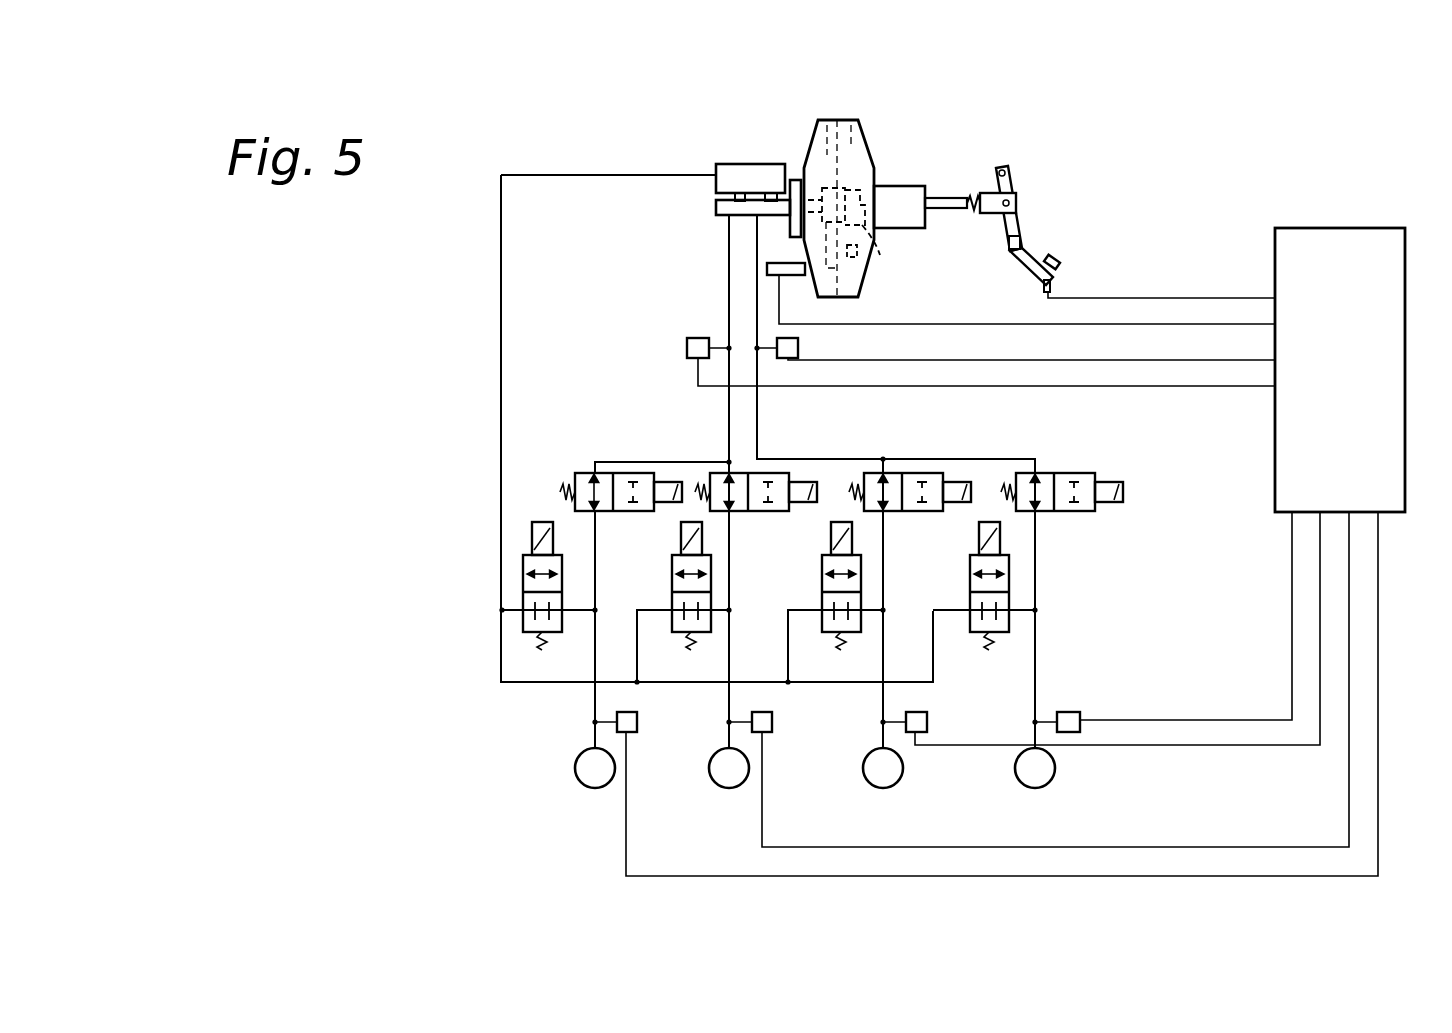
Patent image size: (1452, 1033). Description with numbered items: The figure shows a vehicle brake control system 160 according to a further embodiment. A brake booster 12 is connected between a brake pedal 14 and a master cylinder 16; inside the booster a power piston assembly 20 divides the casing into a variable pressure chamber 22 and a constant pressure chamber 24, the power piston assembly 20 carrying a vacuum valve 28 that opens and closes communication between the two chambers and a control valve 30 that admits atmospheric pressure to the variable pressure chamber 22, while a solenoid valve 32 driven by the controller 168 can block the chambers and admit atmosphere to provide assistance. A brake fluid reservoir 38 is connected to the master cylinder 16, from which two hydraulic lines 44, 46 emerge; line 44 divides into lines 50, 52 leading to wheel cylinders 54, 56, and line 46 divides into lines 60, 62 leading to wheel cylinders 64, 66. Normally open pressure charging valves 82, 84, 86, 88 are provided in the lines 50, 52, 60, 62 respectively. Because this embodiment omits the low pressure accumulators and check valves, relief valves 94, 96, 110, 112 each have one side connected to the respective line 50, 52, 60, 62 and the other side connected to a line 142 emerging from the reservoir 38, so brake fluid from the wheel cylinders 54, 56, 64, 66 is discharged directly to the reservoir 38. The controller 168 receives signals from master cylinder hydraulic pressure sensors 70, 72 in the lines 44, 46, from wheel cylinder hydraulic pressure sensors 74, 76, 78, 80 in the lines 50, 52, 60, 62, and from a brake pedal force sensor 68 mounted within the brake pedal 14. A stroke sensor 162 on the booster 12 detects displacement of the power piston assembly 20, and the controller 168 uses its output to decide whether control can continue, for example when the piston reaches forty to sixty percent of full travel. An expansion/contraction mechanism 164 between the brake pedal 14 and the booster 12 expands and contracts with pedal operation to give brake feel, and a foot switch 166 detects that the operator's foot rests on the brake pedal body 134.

The brake booster 12 is at (862, 127).
The brake pedal 14 is at (1020, 232).
The master cylinder 16 is at (716, 208).
The power piston assembly 20 is at (835, 192).
The variable pressure chamber 22 is at (852, 133).
The constant pressure chamber 24 is at (823, 135).
The vacuum valve 28 is at (858, 196).
The control valve 30 is at (880, 255).
The solenoid valve 32 is at (858, 257).
The brake fluid reservoir 38 is at (716, 170).
The hydraulic line 44 is at (728, 404).
The hydraulic line 46 is at (758, 408).
The hydraulic line 50 is at (596, 520).
The hydraulic line 52 is at (730, 532).
The wheel cylinder 54 is at (594, 789).
The wheel cylinder 56 is at (729, 789).
The hydraulic line 60 is at (884, 524).
The hydraulic line 62 is at (1036, 558).
The wheel cylinder 64 is at (883, 789).
The wheel cylinder 66 is at (1035, 789).
The brake pedal force sensor 68 is at (1021, 243).
The master cylinder hydraulic pressure sensor 70 is at (687, 345).
The master cylinder hydraulic pressure sensor 72 is at (798, 350).
The wheel cylinder hydraulic pressure sensor 74 is at (629, 733).
The wheel cylinder hydraulic pressure sensor 76 is at (765, 733).
The wheel cylinder hydraulic pressure sensor 78 is at (928, 722).
The wheel cylinder hydraulic pressure sensor 80 is at (1080, 718).
The pressure charging valve 82 is at (587, 473).
The pressure charging valve 84 is at (719, 473).
The pressure charging valve 86 is at (906, 473).
The pressure charging valve 88 is at (1100, 473).
The relief valve 94 is at (523, 567).
The relief valve 96 is at (672, 571).
The pressure relief valve 110 is at (822, 571).
The pressure relief valve 112 is at (970, 561).
The brake pedal body 134 is at (1062, 268).
The line 142 is at (549, 683).
The brake control system 160 is at (1088, 149).
The stroke sensor 162 is at (767, 269).
The expansion/contraction mechanism 164 is at (968, 200).
The foot switch 166 is at (1044, 288).
The controller 168 is at (1334, 228).